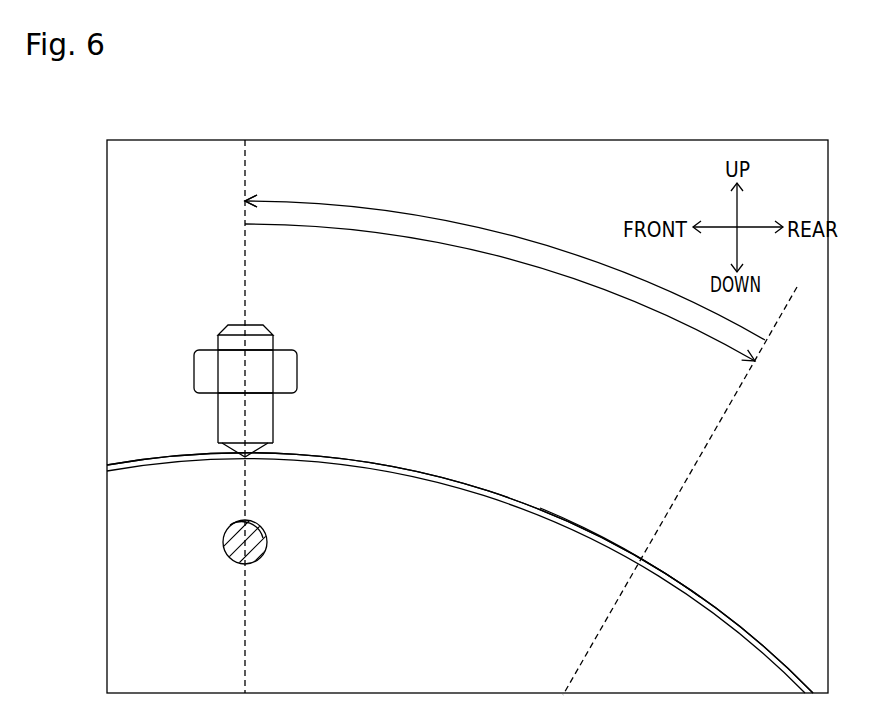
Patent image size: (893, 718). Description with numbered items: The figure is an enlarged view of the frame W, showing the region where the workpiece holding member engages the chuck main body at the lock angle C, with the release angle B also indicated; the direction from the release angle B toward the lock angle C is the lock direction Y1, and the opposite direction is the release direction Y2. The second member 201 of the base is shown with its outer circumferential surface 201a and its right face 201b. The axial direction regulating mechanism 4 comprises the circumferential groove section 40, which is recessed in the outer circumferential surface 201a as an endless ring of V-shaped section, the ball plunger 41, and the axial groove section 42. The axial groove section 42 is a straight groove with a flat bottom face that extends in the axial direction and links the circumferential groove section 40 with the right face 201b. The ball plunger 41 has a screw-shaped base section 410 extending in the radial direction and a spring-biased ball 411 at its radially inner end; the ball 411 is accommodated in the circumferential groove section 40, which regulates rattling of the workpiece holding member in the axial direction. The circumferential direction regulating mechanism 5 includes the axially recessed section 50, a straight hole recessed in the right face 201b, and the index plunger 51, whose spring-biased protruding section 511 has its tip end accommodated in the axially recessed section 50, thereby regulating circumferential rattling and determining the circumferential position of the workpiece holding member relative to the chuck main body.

The frame W is at (144, 140).
The release angle B is at (766, 350).
The lock angle C is at (243, 198).
The lock direction Y1 is at (504, 232).
The release direction Y2 is at (508, 259).
The axial direction regulating mechanism 4 is at (507, 302).
The circumferential groove section 40 is at (423, 472).
The ball plunger 41 is at (285, 395).
The base section 410 is at (233, 417).
The ball 411 is at (232, 447).
The axial groove section 42 is at (633, 553).
The circumferential direction regulating mechanism 5 is at (228, 535).
The axially recessed section 50 is at (240, 521).
The index plunger 51 is at (228, 558).
The protruding section 511 is at (250, 522).
The second member 201 is at (466, 573).
The outer circumferential surface 201a is at (662, 568).
The right face 201b is at (658, 603).